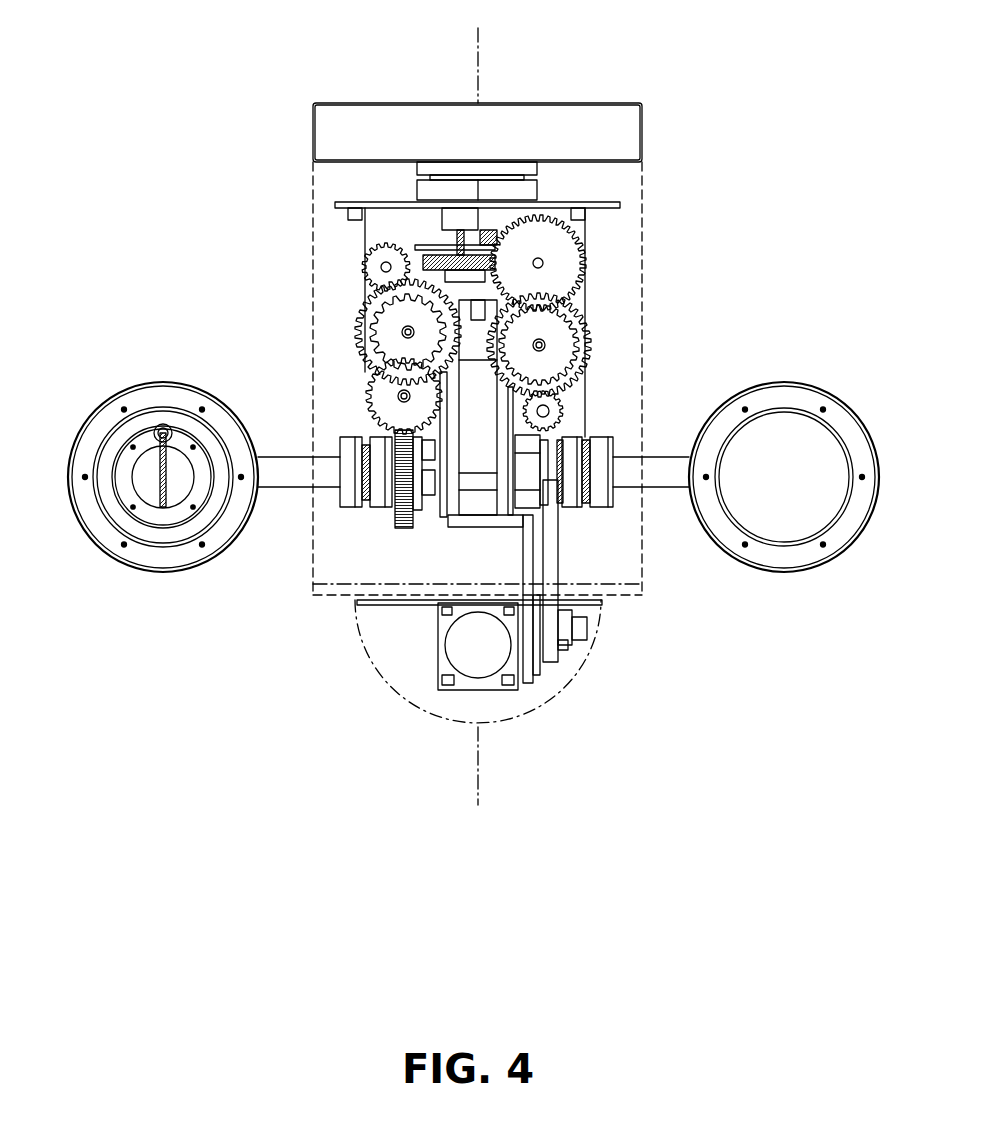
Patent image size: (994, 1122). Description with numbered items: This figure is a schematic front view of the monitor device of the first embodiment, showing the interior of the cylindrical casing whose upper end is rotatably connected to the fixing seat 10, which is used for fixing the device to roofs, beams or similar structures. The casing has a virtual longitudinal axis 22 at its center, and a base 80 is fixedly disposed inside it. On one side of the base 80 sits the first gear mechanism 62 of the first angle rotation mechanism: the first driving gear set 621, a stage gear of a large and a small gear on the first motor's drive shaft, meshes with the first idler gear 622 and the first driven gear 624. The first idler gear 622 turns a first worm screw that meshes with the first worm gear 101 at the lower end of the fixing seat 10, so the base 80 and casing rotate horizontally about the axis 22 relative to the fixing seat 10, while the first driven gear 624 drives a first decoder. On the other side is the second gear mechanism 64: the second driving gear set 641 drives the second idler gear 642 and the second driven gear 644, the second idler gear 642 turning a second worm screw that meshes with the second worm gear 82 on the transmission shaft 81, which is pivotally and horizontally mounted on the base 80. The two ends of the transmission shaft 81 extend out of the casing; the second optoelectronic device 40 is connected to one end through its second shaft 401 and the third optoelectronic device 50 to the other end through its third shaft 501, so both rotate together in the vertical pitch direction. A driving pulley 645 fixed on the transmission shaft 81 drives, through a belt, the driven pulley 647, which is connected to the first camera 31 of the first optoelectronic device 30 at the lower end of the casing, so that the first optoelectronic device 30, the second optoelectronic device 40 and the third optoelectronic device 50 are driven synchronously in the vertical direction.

The fixing seat 10 is at (645, 92).
The virtual longitudinal axis 22 is at (478, 43).
The first worm gear 101 is at (428, 262).
The second gear mechanism 64 is at (332, 316).
The second driven gear 644 is at (366, 262).
The second driving gear set 641 is at (348, 340).
The second idler gear 642 is at (385, 400).
The first gear mechanism 62 is at (627, 365).
The first idler gear 622 is at (572, 262).
The first driving gear set 621 is at (604, 344).
The first driven gear 624 is at (563, 402).
The driving pulley 645 is at (562, 412).
The third optoelectronic device 50 is at (138, 360).
The second optoelectronic device 40 is at (806, 360).
The third shaft 501 is at (283, 473).
The second shaft 401 is at (670, 473).
The second worm gear 82 is at (397, 517).
The base 80 is at (492, 546).
The transmission shaft 81 is at (527, 475).
The first optoelectronic device 30 is at (442, 676).
The first camera 31 is at (437, 672).
The driven pulley 647 is at (565, 647).